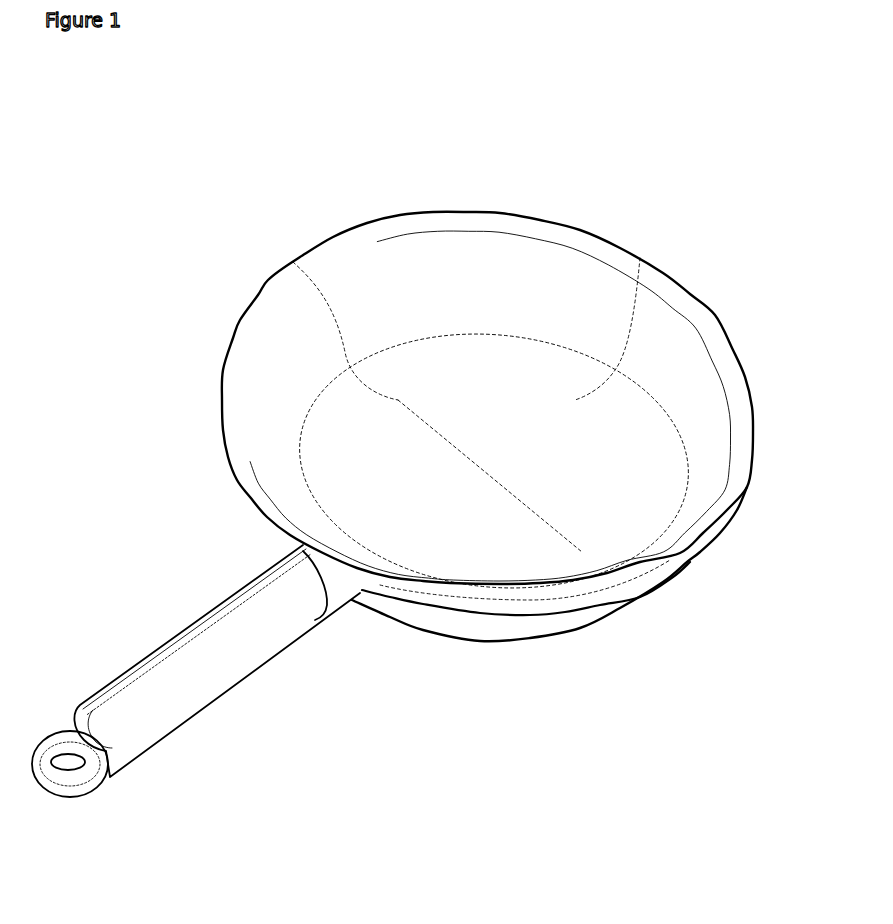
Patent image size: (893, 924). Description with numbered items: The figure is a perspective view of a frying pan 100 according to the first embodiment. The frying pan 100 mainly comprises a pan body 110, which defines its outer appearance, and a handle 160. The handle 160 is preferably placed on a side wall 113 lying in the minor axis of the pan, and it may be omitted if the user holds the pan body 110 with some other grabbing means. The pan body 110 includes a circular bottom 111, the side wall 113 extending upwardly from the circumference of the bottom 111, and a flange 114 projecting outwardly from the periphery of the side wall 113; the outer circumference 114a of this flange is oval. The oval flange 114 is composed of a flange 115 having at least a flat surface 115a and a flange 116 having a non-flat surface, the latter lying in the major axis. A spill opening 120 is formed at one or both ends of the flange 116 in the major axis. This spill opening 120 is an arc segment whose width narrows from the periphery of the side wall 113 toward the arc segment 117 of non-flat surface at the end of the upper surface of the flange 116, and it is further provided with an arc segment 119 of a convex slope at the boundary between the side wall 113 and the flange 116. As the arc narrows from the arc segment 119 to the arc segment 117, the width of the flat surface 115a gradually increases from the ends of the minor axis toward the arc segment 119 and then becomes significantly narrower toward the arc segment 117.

The frying pan 100 is at (461, 103).
The pan body 110 is at (600, 208).
The bottom 111 is at (477, 516).
The side wall 113 is at (347, 358).
The flange 114 is at (156, 514).
The outer circumference 114a is at (717, 314).
The flange 115 is at (663, 274).
The flat surface 115a is at (503, 222).
The flange 116 is at (269, 281).
The arc segment of non-flat surface 117 is at (313, 260).
The arc segment of a convex slope 119 is at (347, 357).
The spill opening 120 is at (729, 529).
The handle 160 is at (162, 764).